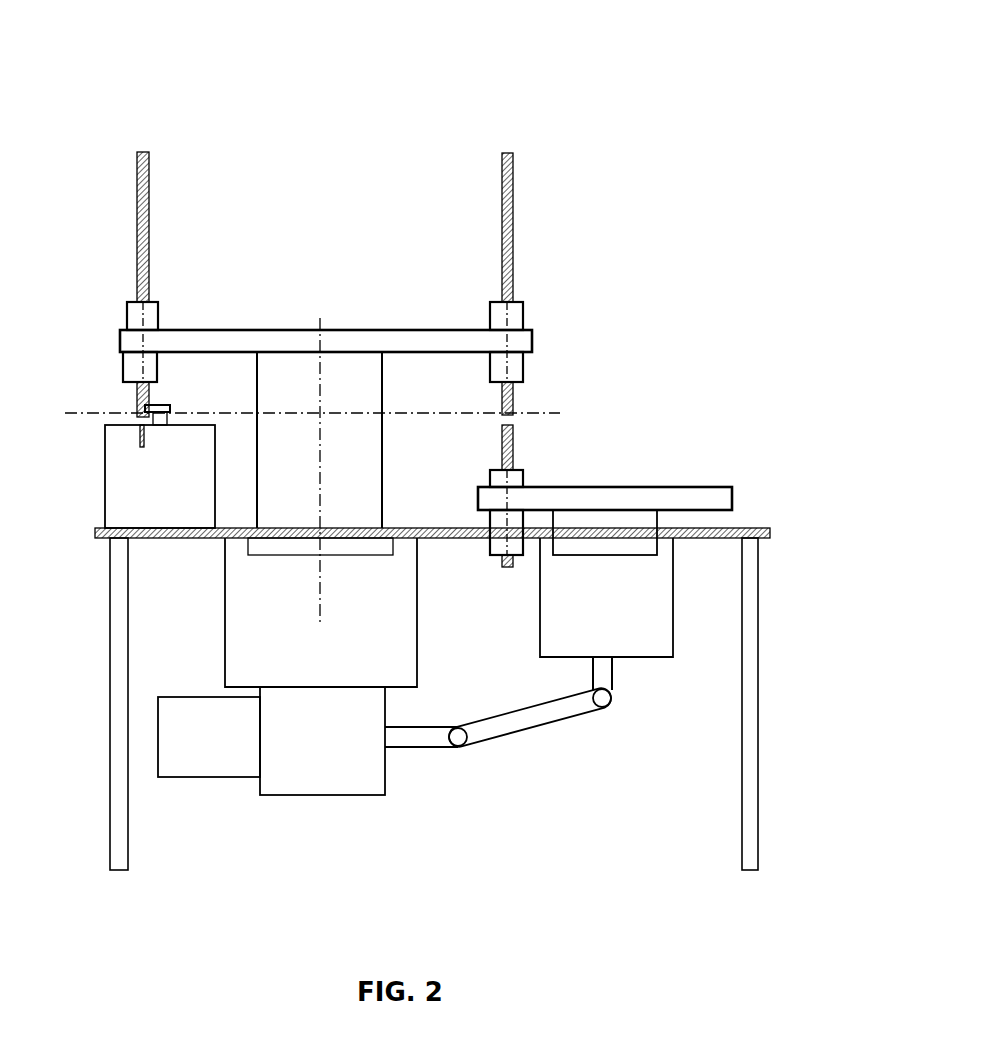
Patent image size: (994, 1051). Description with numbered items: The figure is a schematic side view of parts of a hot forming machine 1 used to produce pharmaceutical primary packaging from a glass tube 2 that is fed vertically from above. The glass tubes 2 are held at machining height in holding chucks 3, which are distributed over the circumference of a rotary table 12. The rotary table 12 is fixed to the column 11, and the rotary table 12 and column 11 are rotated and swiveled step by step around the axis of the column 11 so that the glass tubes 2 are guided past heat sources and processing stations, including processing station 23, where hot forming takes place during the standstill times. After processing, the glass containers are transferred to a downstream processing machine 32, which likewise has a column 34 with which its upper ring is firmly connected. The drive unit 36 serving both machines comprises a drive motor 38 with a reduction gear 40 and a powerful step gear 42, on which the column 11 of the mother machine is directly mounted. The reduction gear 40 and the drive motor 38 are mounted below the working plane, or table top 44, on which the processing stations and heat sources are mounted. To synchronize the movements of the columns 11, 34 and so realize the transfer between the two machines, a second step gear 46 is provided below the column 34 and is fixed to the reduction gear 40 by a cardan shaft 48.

The hot forming machine 1 is at (617, 113).
The glass tube 2 is at (150, 176).
The holding chuck 3 is at (128, 317).
The column 11 is at (348, 380).
The rotary table 12 is at (530, 340).
The processing station 23 is at (158, 406).
The downstream processing machine 32 is at (710, 487).
The column 34 is at (638, 518).
The drive unit 36 is at (423, 762).
The drive motor 38 is at (200, 712).
The reduction gear 40 is at (375, 712).
The step gear 42 is at (405, 603).
The table top 44 is at (757, 528).
The second step gear 46 is at (560, 614).
The cardan shaft 48 is at (543, 730).